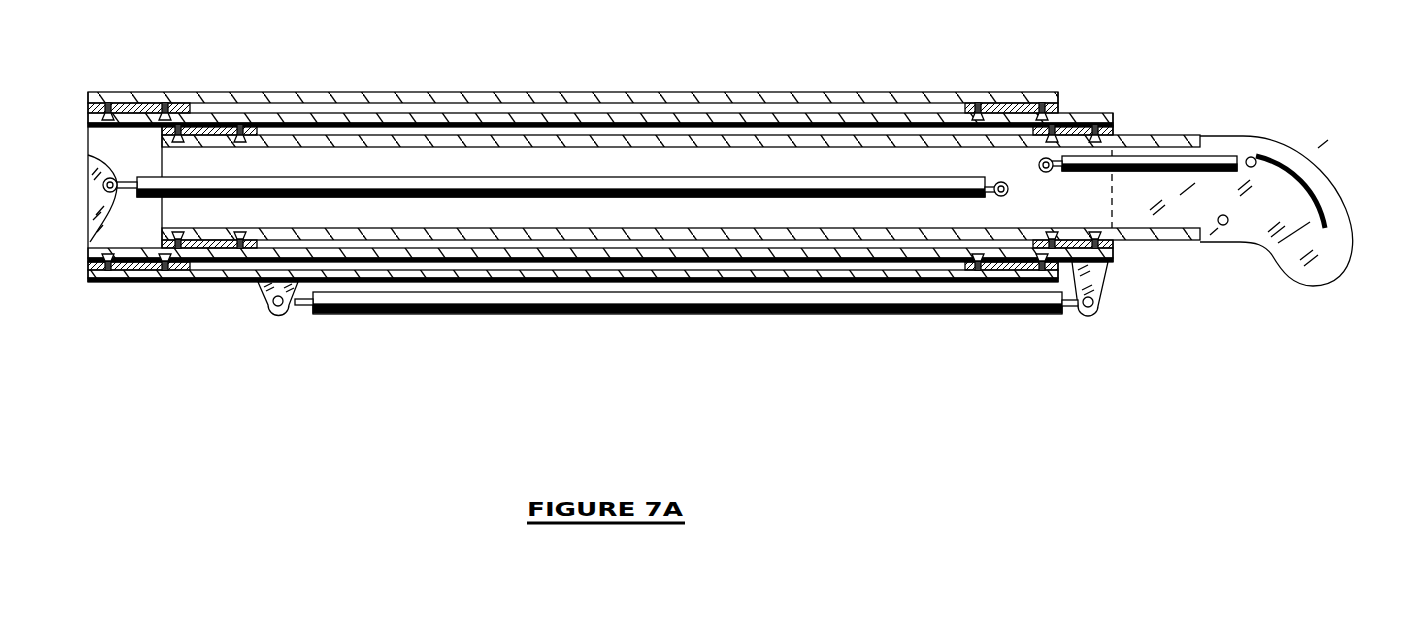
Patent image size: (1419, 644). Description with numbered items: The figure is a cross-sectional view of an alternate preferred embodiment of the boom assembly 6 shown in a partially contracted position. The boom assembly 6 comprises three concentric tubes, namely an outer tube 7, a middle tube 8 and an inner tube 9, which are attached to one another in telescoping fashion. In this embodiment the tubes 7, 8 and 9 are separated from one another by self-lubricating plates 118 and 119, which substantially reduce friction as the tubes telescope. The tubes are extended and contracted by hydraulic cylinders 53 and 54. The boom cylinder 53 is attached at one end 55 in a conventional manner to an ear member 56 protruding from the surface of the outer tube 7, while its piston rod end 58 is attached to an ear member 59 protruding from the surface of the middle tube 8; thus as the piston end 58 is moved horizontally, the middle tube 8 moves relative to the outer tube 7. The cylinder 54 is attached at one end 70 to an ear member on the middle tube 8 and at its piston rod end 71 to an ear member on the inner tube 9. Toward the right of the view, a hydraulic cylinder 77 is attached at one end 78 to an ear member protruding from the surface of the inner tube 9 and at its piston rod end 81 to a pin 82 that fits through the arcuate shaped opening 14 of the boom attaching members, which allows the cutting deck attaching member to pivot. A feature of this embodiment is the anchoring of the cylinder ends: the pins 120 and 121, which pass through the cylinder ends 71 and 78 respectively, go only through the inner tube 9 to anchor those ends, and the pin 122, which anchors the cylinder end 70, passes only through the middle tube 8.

The boom assembly 6 is at (687, 56).
The outer tube 7 is at (458, 93).
The middle tube 8 is at (585, 113).
The inner tube 9 is at (770, 135).
The arcuate shaped opening 14 is at (1312, 198).
The boom cylinder 53 is at (686, 300).
The cylinder 54 is at (532, 190).
The one end 55 is at (305, 306).
The ear member 56 is at (262, 298).
The piston rod end 58 is at (1073, 308).
The ear member 59 is at (1095, 282).
The one end 70 is at (136, 150).
The piston rod end 71 is at (993, 183).
The hydraulic cylinder 77 is at (1218, 155).
The one end 78 is at (1055, 168).
The piston rod end 81 is at (1262, 160).
The pin 82 is at (1260, 158).
The self-lubricating plate 118 is at (159, 93).
The self-lubricating plate 119 is at (240, 125).
The pin 120 is at (1002, 197).
The pin 121 is at (1040, 171).
The pin 122 is at (94, 200).